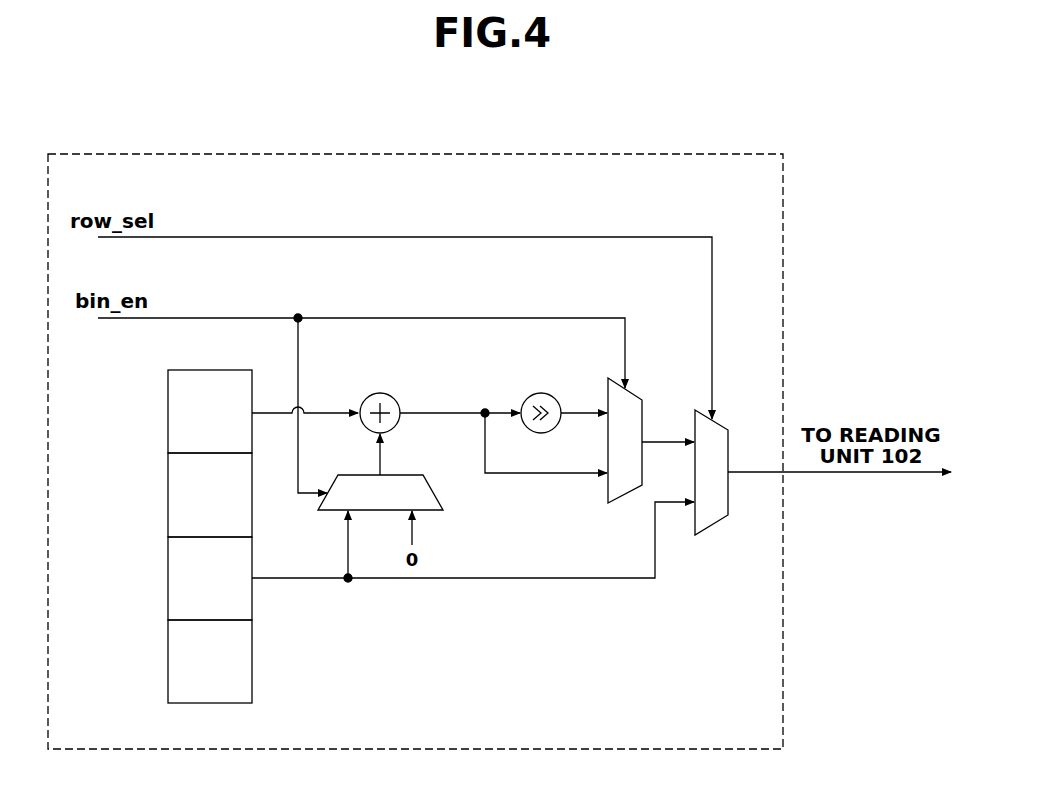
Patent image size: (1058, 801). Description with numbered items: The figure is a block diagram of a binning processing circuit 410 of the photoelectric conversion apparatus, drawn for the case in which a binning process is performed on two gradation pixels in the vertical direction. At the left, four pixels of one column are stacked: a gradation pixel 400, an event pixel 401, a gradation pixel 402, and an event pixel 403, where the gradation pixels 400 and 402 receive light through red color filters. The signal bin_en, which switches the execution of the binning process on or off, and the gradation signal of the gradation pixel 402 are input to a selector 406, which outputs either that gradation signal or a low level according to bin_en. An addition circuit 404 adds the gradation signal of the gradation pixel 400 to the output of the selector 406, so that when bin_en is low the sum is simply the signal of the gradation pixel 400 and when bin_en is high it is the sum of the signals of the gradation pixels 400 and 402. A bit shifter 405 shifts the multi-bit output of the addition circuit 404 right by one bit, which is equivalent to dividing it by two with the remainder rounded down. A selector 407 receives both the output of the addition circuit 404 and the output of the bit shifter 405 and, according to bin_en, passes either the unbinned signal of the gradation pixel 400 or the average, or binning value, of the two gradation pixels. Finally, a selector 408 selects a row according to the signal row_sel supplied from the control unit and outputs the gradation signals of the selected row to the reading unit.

The binning processing circuit 410 is at (487, 153).
The gradation pixel 400 is at (168, 413).
The event pixel 401 is at (168, 498).
The gradation pixel 402 is at (168, 580).
The event pixel 403 is at (168, 665).
The addition circuit 404 is at (384, 393).
The bit shifter 405 is at (540, 393).
The selector 406 is at (408, 474).
The selector 407 is at (627, 390).
The selector 408 is at (721, 421).